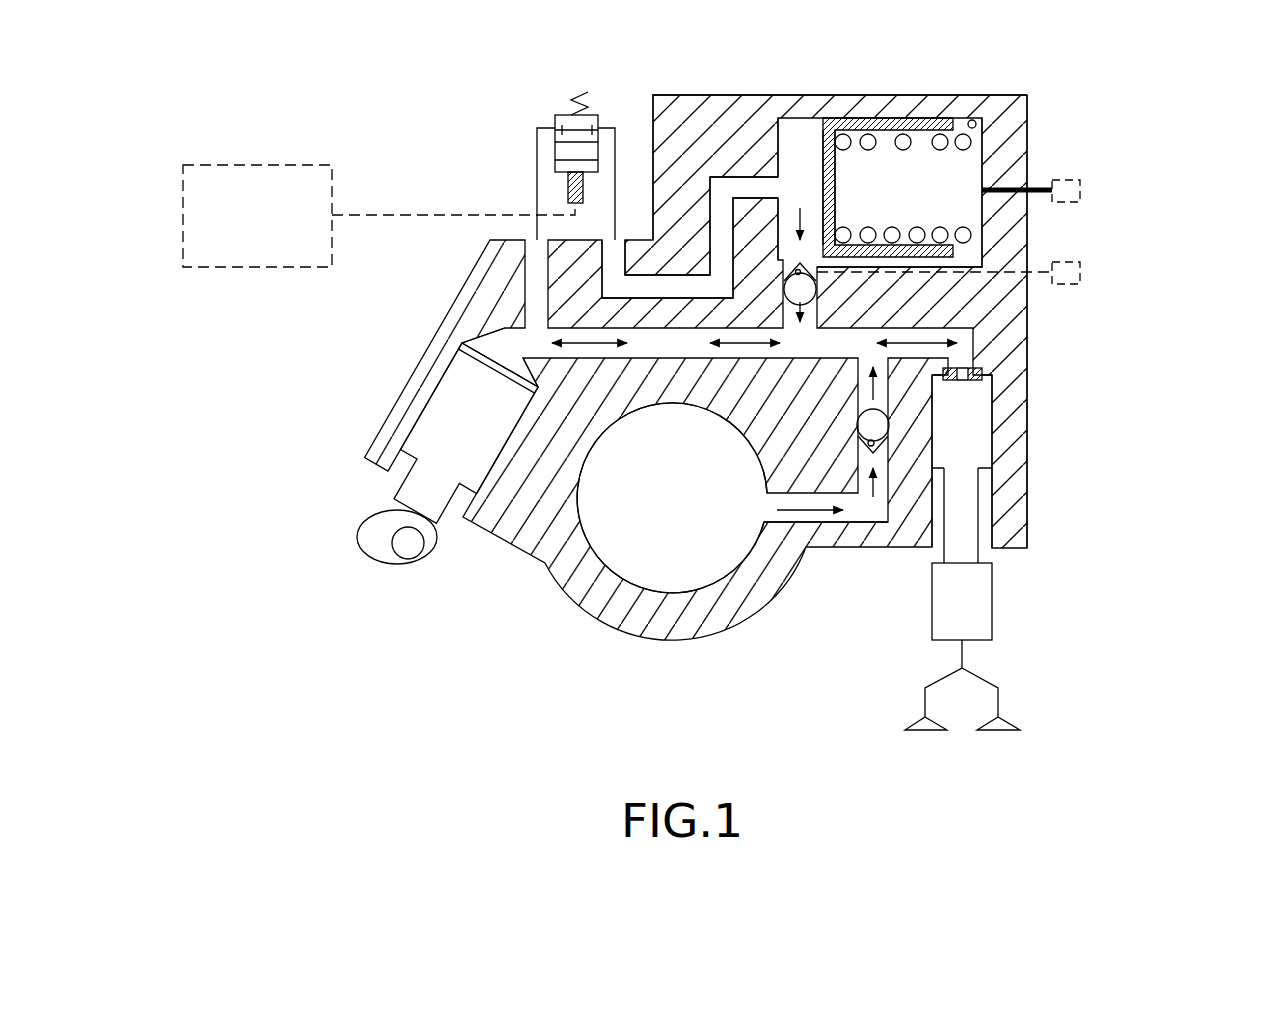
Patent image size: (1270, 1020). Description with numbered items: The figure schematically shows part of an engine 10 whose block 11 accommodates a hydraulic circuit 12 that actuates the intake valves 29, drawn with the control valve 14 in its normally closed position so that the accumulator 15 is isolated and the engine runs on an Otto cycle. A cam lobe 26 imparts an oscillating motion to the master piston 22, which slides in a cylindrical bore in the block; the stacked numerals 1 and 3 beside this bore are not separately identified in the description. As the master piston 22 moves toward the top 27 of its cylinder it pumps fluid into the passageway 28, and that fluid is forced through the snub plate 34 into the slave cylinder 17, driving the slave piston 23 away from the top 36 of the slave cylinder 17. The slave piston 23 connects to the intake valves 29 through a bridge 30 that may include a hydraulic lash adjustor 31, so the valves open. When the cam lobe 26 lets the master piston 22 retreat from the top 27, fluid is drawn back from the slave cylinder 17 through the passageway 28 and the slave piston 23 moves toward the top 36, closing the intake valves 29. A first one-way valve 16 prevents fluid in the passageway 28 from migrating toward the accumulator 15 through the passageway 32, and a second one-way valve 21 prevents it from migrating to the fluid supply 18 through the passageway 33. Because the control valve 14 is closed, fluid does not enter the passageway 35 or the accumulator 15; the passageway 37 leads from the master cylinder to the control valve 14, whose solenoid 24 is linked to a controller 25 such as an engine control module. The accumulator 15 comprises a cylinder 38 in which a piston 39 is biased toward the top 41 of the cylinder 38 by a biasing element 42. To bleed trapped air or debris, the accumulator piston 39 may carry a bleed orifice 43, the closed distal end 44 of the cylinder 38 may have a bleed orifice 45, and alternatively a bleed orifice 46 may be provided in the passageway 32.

The high-pressure pump 1 is at (430, 341).
The pump chamber 3 is at (458, 355).
The engine 10 is at (1130, 472).
The block 11 is at (1028, 318).
The hydraulic circuit 12 is at (727, 135).
The control valve 14 is at (540, 90).
The accumulator 15 is at (866, 92).
The first one-way valve 16 is at (817, 290).
The slave cylinder 17 is at (990, 390).
The fluid supply 18 is at (663, 557).
The second one-way valve 21 is at (873, 427).
The master piston 22 is at (436, 447).
The slave piston 23 is at (972, 447).
The solenoid 24 is at (583, 200).
The controller 25 is at (258, 163).
The cam lobe 26 is at (357, 528).
The top of the master cylinder 27 is at (517, 370).
The passageway 28 is at (683, 358).
The intake valves 29 is at (925, 730).
The bridge 30 is at (930, 670).
The hydraulic lash adjustor 31 is at (992, 600).
The passageway 32 is at (795, 262).
The passageway 33 is at (858, 476).
The snub plate 34 is at (986, 362).
The passageway 35 is at (652, 275).
The top of the slave cylinder 36 is at (912, 540).
The passageway 37 is at (528, 263).
The accumulator cylinder 38 is at (982, 118).
The accumulator piston 39 is at (905, 118).
The top of the accumulator cylinder 41 is at (780, 177).
The biasing element 42 is at (965, 224).
The bleed orifice 43 is at (835, 192).
The closed distal end 44 is at (975, 155).
The bleed orifice 45 is at (1010, 180).
The bleed orifice 46 is at (983, 265).